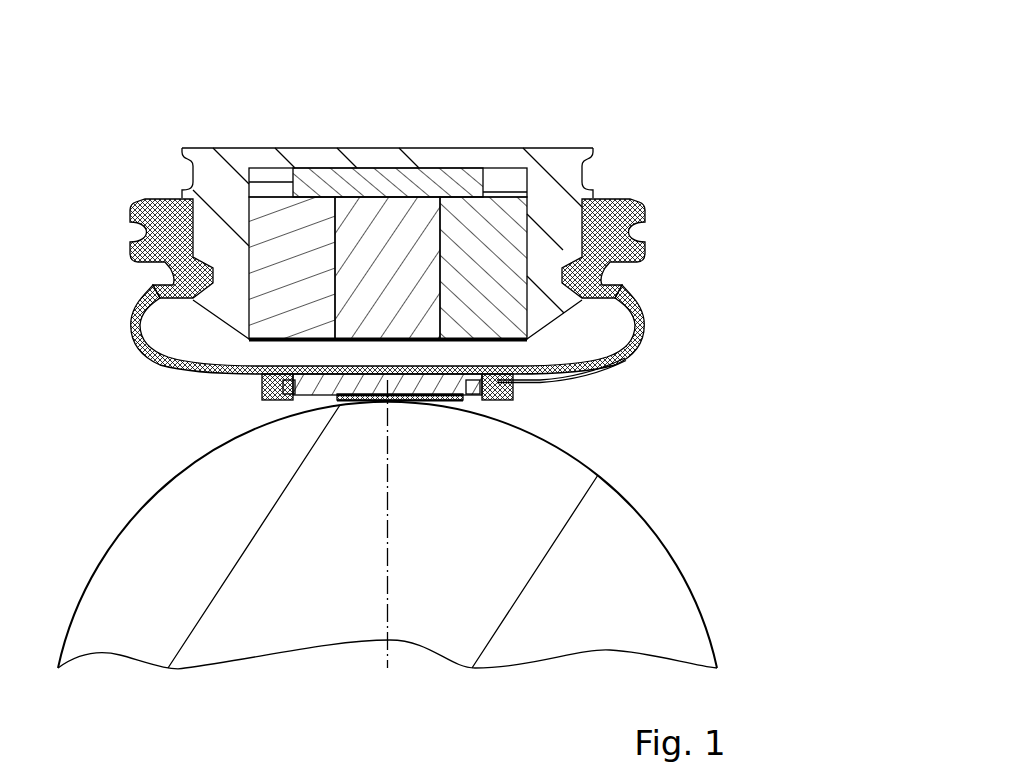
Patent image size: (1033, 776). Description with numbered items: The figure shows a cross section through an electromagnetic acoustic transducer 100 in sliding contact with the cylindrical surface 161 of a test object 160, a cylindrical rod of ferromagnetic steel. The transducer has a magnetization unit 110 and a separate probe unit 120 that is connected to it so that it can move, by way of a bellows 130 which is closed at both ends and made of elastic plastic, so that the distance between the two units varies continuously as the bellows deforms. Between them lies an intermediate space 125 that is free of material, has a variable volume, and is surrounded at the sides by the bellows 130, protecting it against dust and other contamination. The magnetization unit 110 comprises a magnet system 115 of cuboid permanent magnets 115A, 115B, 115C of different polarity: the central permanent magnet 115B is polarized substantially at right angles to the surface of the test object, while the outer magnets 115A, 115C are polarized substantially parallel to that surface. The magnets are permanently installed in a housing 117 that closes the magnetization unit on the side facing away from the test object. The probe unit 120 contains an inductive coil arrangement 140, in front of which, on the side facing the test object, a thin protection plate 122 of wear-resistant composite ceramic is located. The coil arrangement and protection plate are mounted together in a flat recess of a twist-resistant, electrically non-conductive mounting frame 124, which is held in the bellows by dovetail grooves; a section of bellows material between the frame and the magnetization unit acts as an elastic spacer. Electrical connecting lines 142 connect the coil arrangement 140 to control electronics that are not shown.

The electromagnetic acoustic transducer 100 is at (594, 108).
The magnetization unit 110 is at (608, 178).
The magnet system 115 is at (235, 202).
The outer permanent magnet 115A is at (310, 212).
The central permanent magnet 115B is at (407, 209).
The outer permanent magnet 115C is at (498, 208).
The housing 117 is at (257, 155).
The probe unit 120 is at (536, 394).
The protection plate 122 is at (440, 400).
The mounting frame 124 is at (312, 390).
The intermediate space 125 is at (537, 344).
The bellows 130 is at (645, 309).
The inductive coil arrangement 140 is at (400, 400).
The electrical connecting lines 142 is at (610, 368).
The test object 160 is at (563, 637).
The cylindrical surface 161 is at (613, 482).